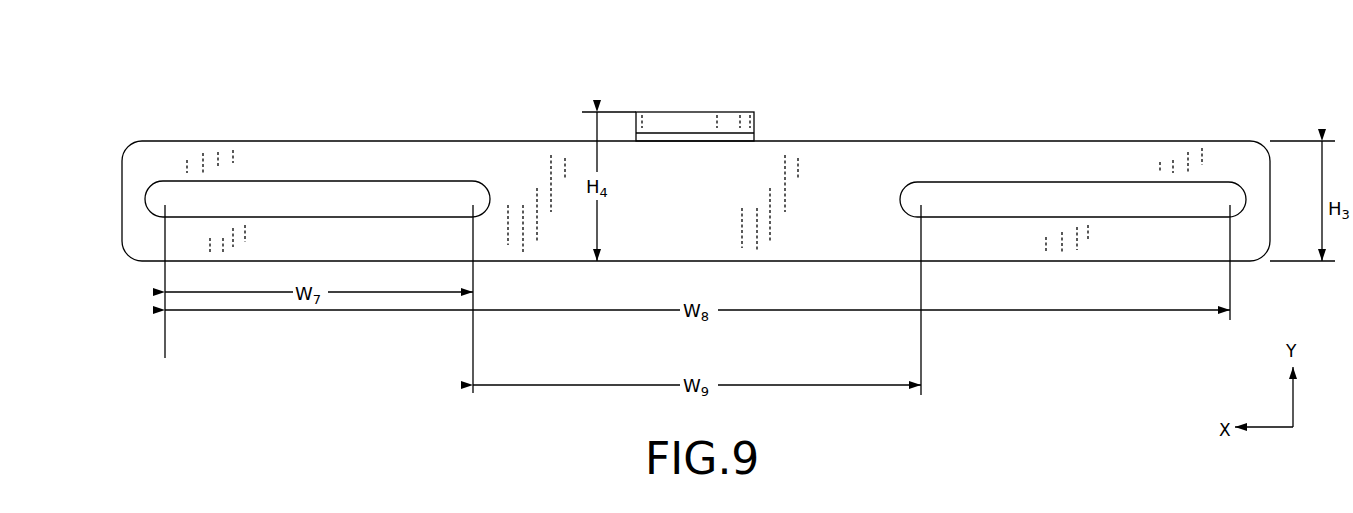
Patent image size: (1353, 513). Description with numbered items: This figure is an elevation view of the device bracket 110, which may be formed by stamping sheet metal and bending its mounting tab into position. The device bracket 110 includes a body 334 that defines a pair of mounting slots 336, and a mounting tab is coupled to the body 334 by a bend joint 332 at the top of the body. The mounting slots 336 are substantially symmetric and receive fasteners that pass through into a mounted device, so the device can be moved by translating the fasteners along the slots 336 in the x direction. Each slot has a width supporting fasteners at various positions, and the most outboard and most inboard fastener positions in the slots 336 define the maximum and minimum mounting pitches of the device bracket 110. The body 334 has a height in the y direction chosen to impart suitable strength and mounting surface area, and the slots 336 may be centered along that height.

The device bracket 110 is at (683, 138).
The bend joint 332 is at (755, 140).
The body 334 is at (1123, 142).
The mounting slots 336 is at (333, 200).